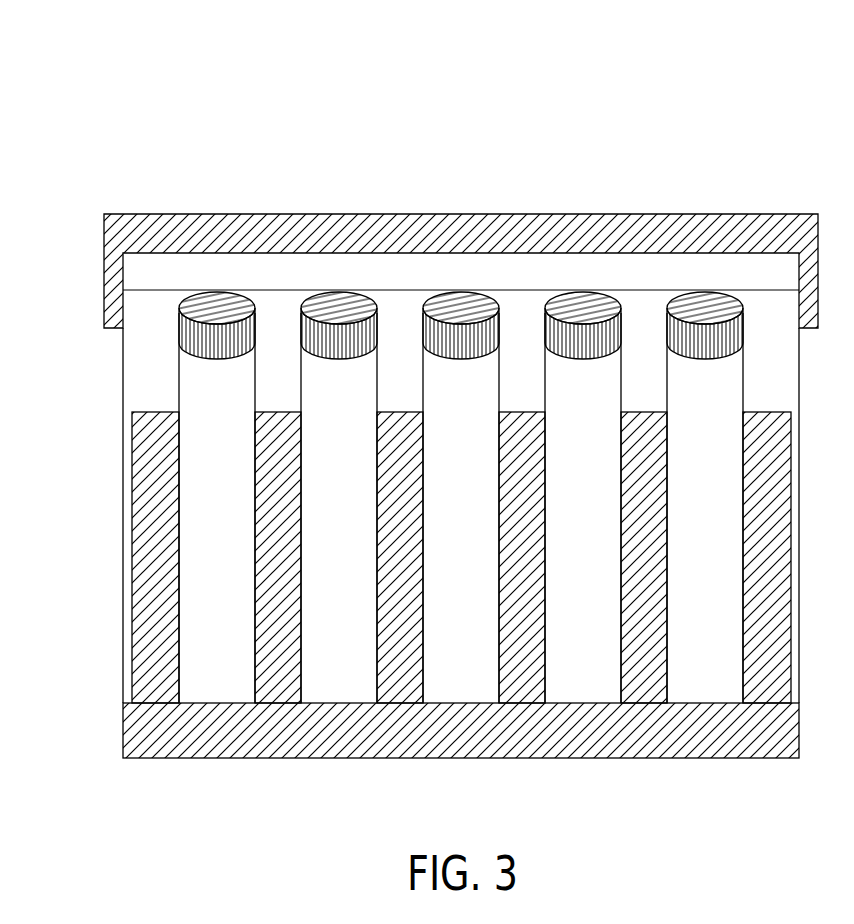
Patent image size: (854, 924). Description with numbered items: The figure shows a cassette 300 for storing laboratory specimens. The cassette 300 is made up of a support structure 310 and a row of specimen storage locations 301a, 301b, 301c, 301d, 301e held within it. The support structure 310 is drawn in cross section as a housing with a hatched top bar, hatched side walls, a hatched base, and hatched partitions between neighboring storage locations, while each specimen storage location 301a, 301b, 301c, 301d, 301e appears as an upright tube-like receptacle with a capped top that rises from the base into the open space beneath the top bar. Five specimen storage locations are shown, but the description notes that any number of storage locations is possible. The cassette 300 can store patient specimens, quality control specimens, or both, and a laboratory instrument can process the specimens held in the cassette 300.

The cassette 300 is at (88, 43).
The support structure 310 is at (110, 266).
The specimen storage location 301a is at (231, 299).
The specimen storage location 301b is at (346, 299).
The specimen storage location 301c is at (473, 299).
The specimen storage location 301d is at (591, 299).
The specimen storage location 301e is at (713, 299).